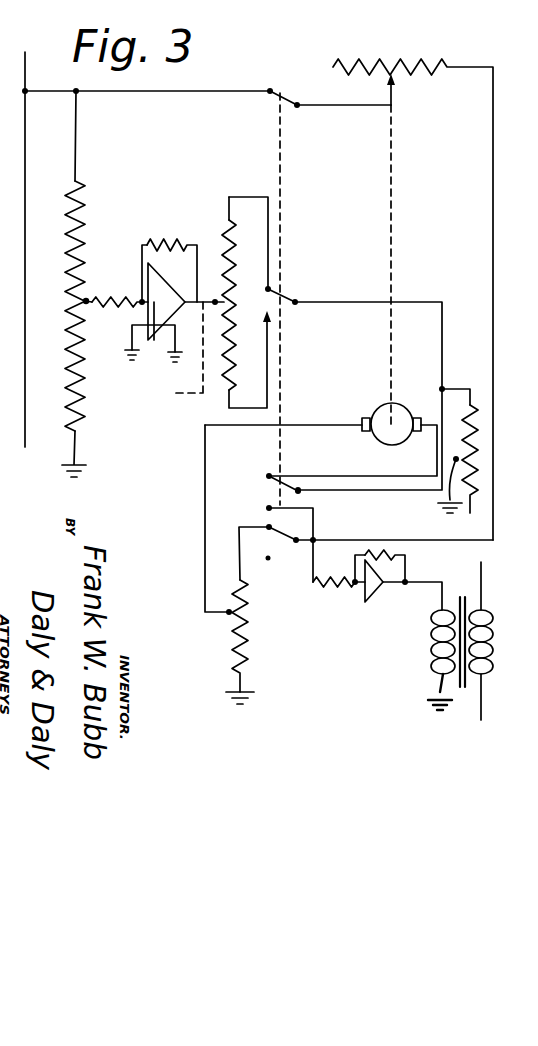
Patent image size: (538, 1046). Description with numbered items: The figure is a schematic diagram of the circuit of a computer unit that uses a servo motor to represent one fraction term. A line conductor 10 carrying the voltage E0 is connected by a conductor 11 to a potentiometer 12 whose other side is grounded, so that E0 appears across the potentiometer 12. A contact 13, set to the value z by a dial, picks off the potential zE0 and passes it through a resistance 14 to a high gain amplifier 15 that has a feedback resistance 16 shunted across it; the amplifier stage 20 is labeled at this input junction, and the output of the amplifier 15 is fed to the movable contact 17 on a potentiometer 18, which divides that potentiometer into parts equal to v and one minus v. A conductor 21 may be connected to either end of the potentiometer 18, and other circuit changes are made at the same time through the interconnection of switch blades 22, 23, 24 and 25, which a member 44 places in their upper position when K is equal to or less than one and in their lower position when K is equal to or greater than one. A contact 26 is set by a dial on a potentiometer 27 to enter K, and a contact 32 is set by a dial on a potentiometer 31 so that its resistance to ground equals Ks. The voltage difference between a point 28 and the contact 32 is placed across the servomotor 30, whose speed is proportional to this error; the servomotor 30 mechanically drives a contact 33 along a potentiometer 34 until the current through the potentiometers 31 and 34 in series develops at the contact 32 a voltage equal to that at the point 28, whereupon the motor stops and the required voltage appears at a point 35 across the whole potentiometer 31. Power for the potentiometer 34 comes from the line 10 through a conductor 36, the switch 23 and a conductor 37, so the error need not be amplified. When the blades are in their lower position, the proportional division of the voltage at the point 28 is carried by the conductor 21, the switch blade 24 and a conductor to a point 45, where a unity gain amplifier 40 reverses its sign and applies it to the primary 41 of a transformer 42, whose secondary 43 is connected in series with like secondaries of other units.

The line conductor 10 is at (26, 428).
The conductor 11 is at (49, 96).
The potentiometer 12 is at (87, 186).
The contact 13 is at (89, 297).
The resistance 14 is at (117, 319).
The high gain amplifier 15 is at (153, 365).
The feedback resistance 16 is at (168, 238).
The movable contact 17 is at (218, 296).
The potentiometer 18 is at (224, 228).
The amplifier 20 is at (140, 312).
The conductor 21 is at (410, 301).
The switch blade 22 is at (280, 290).
The switch blade 23 is at (286, 96).
The switch blade 24 is at (285, 478).
The switch blade 25 is at (289, 543).
The contact 26 is at (446, 504).
The potentiometer 27 is at (470, 400).
The point 28 is at (305, 300).
The servomotor 30 is at (385, 440).
The potentiometer 31 is at (249, 626).
The contact 32 is at (228, 614).
The contact 33 is at (395, 100).
The potentiometer 34 is at (392, 62).
The point 35 is at (300, 540).
The conductor 36 is at (172, 91).
The conductor 37 is at (330, 106).
The unity gain amplifier 40 is at (378, 598).
The primary 41 is at (430, 636).
The transformer 42 is at (462, 592).
The secondary 43 is at (499, 641).
The member 44 is at (283, 372).
The point 45 is at (306, 586).